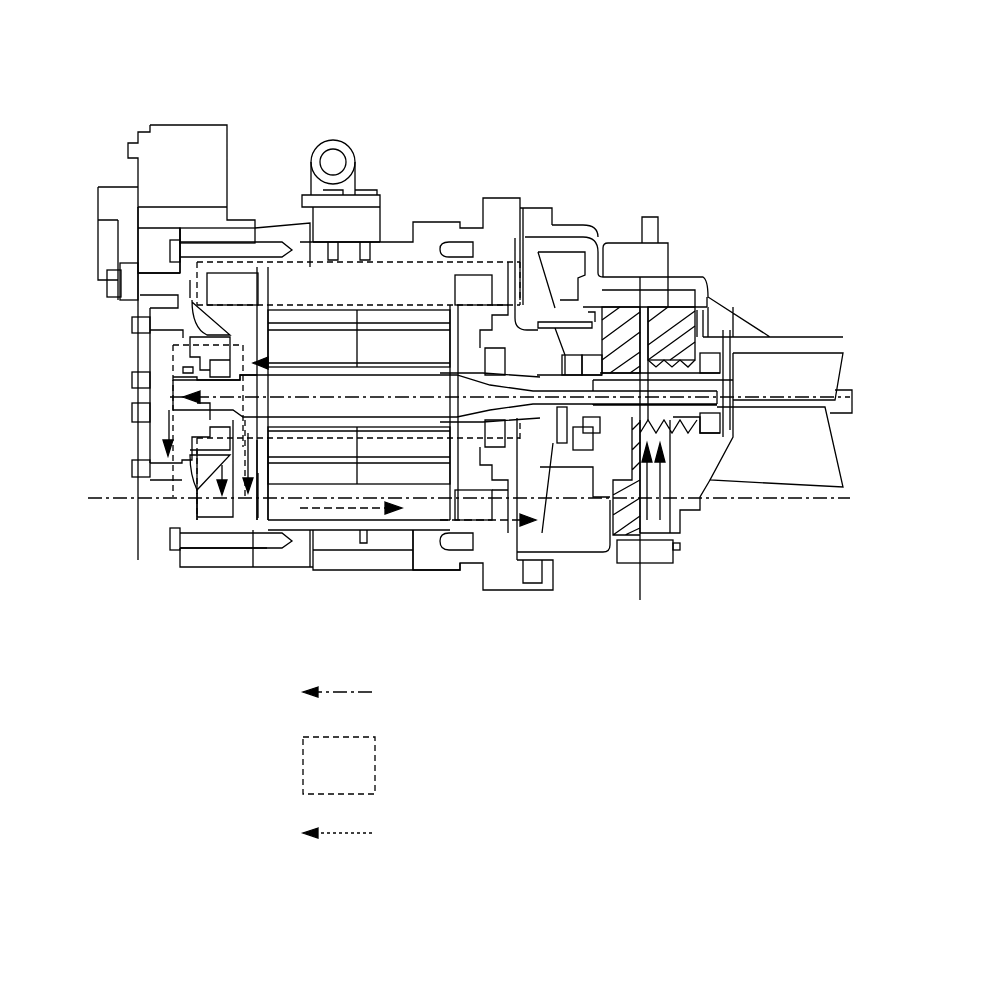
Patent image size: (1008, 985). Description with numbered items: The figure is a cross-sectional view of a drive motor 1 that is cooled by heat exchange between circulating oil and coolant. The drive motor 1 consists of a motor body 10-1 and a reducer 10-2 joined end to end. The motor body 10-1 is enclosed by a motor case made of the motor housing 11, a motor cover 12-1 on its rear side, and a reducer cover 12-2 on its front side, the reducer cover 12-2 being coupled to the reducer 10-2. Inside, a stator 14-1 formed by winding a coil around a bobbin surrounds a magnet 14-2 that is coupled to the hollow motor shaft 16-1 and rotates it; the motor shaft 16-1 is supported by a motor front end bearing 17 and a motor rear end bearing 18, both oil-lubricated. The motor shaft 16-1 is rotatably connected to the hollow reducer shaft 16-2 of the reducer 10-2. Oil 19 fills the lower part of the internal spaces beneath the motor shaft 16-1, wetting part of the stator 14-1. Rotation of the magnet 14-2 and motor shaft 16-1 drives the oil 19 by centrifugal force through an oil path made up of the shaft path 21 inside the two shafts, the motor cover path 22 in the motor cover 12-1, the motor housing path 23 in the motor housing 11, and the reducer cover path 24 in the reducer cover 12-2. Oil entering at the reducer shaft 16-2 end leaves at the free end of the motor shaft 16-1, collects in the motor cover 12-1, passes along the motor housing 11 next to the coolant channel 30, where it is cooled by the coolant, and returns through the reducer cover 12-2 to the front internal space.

The drive motor 1 is at (622, 82).
The motor body 10-1 is at (148, 213).
The reducer 10-2 is at (708, 302).
The motor housing 11 is at (388, 240).
The motor cover 12-1 is at (218, 232).
The reducer cover 12-2 is at (545, 237).
The stator 14-1 is at (330, 280).
The magnet 14-2 is at (397, 470).
The motor shaft 16-1 is at (555, 430).
The reducer shaft 16-2 is at (692, 437).
The motor front end bearing 17 is at (517, 433).
The motor rear end bearing 18 is at (182, 480).
The oil 19 is at (808, 367).
The shaft path 21 is at (278, 470).
The motor cover path 22 is at (158, 418).
The motor housing path 23 is at (250, 510).
The reducer cover path 24 is at (422, 523).
The coolant channel 30 is at (451, 237).